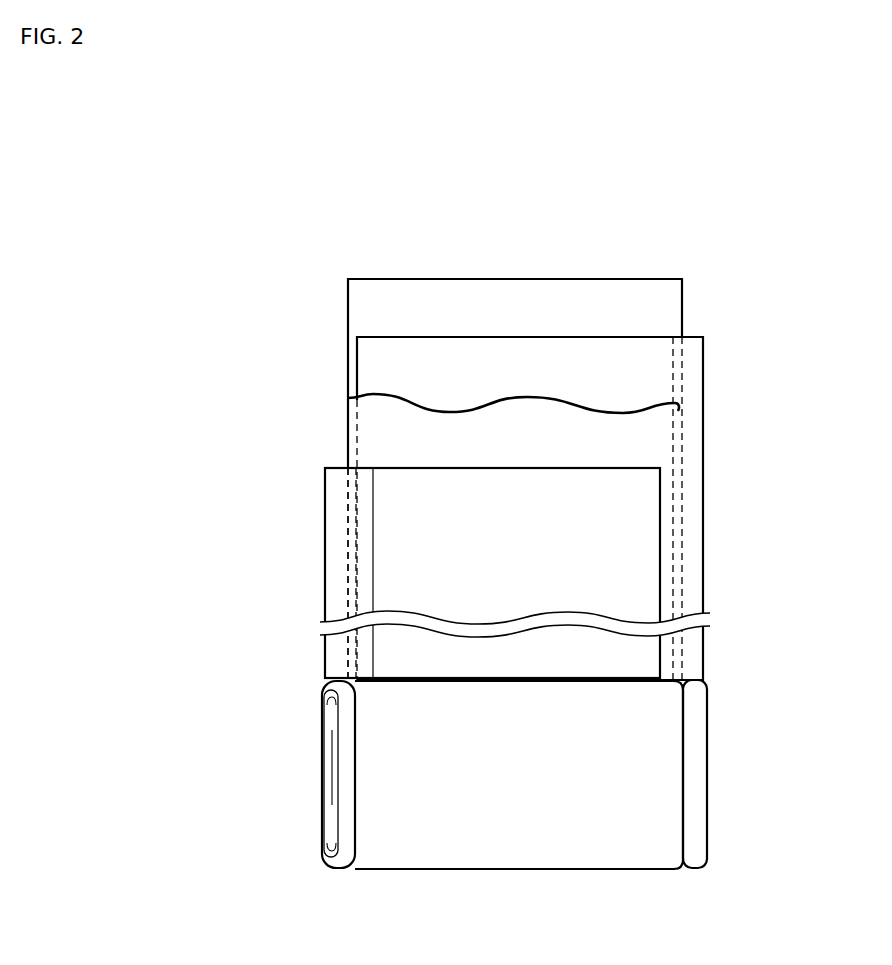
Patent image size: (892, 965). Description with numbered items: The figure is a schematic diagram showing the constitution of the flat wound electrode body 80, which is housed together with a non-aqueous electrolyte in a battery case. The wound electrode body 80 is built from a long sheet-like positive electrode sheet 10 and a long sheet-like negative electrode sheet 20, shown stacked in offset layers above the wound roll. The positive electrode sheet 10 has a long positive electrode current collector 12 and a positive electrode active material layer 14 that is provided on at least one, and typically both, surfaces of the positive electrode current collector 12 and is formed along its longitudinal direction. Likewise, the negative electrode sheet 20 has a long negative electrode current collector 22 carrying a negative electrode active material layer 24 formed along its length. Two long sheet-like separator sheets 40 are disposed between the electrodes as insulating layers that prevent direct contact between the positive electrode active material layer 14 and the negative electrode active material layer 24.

The positive electrode sheet 10 is at (442, 573).
The positive electrode current collector 12 is at (320, 605).
The positive electrode active material layer 14 is at (385, 485).
The negative electrode sheet 20 is at (574, 505).
The negative electrode current collector 22 is at (705, 517).
The negative electrode active material layer 24 is at (668, 359).
The separator sheet 40 is at (368, 302).
The flat wound electrode body 80 is at (576, 850).